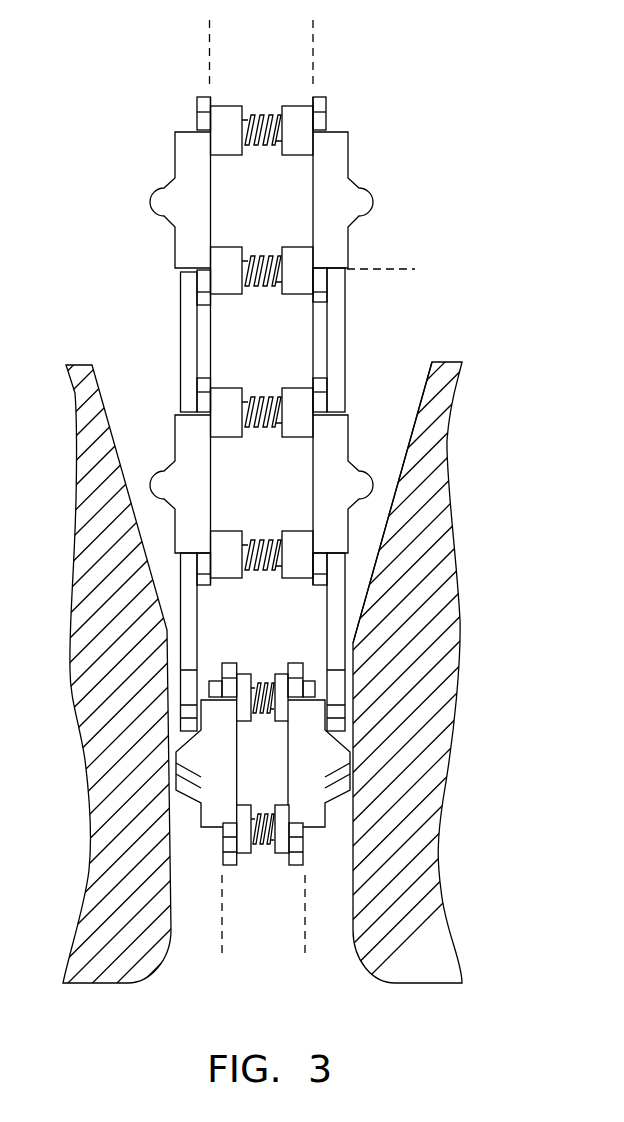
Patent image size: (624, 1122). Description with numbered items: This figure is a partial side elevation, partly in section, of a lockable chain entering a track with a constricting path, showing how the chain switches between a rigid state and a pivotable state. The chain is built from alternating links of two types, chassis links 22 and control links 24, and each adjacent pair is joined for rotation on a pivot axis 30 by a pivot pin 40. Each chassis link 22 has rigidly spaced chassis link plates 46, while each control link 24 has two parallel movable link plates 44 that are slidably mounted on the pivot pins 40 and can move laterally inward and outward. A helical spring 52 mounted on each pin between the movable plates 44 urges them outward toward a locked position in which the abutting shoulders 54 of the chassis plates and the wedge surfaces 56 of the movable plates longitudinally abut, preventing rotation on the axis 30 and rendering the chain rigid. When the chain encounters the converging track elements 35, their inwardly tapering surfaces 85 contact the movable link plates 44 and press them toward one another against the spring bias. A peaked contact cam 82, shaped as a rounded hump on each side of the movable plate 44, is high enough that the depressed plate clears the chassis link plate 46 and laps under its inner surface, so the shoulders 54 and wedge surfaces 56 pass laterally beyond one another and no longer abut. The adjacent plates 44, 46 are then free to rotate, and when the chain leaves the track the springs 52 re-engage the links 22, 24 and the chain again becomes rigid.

The chassis link 22 is at (172, 338).
The control link 24 is at (167, 123).
The pivot axis 30 is at (398, 270).
The track element 35 is at (73, 690).
The pivot pin 40 is at (255, 268).
The movable link plate 44 is at (198, 100).
The chassis link plate 46 is at (184, 372).
The helical spring 52 is at (264, 118).
The abutting shoulder 54 is at (333, 275).
The wedge surface 56 is at (320, 268).
The peaked contact cam 82 is at (176, 755).
The inwardly tapering surface 85 is at (402, 462).